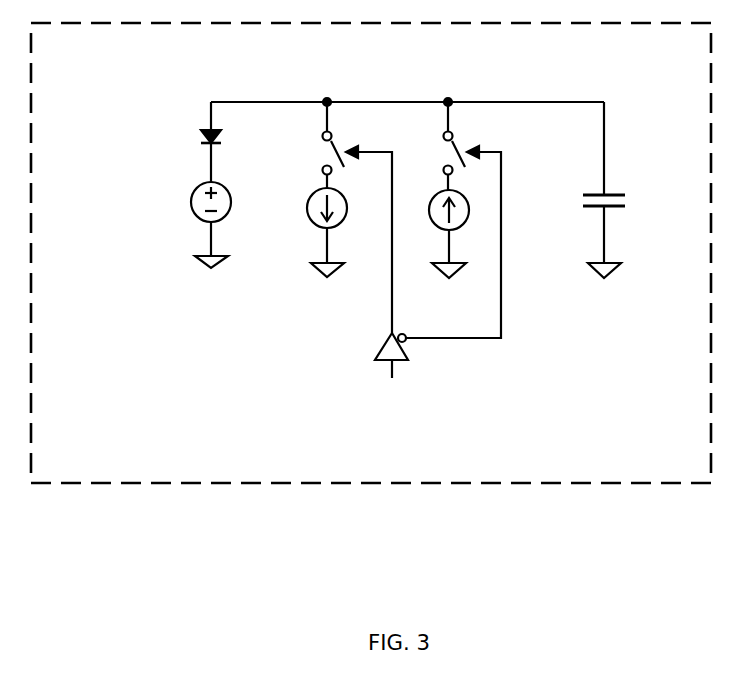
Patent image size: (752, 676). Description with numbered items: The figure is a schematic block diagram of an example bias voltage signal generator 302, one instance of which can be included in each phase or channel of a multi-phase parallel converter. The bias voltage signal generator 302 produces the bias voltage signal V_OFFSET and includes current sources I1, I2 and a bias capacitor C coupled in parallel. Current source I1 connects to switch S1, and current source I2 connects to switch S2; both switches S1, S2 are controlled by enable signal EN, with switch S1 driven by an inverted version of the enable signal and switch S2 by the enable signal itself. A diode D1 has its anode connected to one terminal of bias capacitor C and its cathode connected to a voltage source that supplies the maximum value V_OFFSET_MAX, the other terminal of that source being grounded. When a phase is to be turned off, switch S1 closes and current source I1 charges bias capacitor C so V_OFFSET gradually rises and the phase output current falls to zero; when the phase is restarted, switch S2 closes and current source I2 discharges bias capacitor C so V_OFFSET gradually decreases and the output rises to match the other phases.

The bias voltage signal generator 302 is at (646, 472).
The diode D1 is at (198, 154).
The switch S1 is at (440, 161).
The switch S2 is at (319, 160).
The current source I1 is at (438, 210).
The current source I2 is at (317, 208).
The bias capacitor C is at (615, 202).